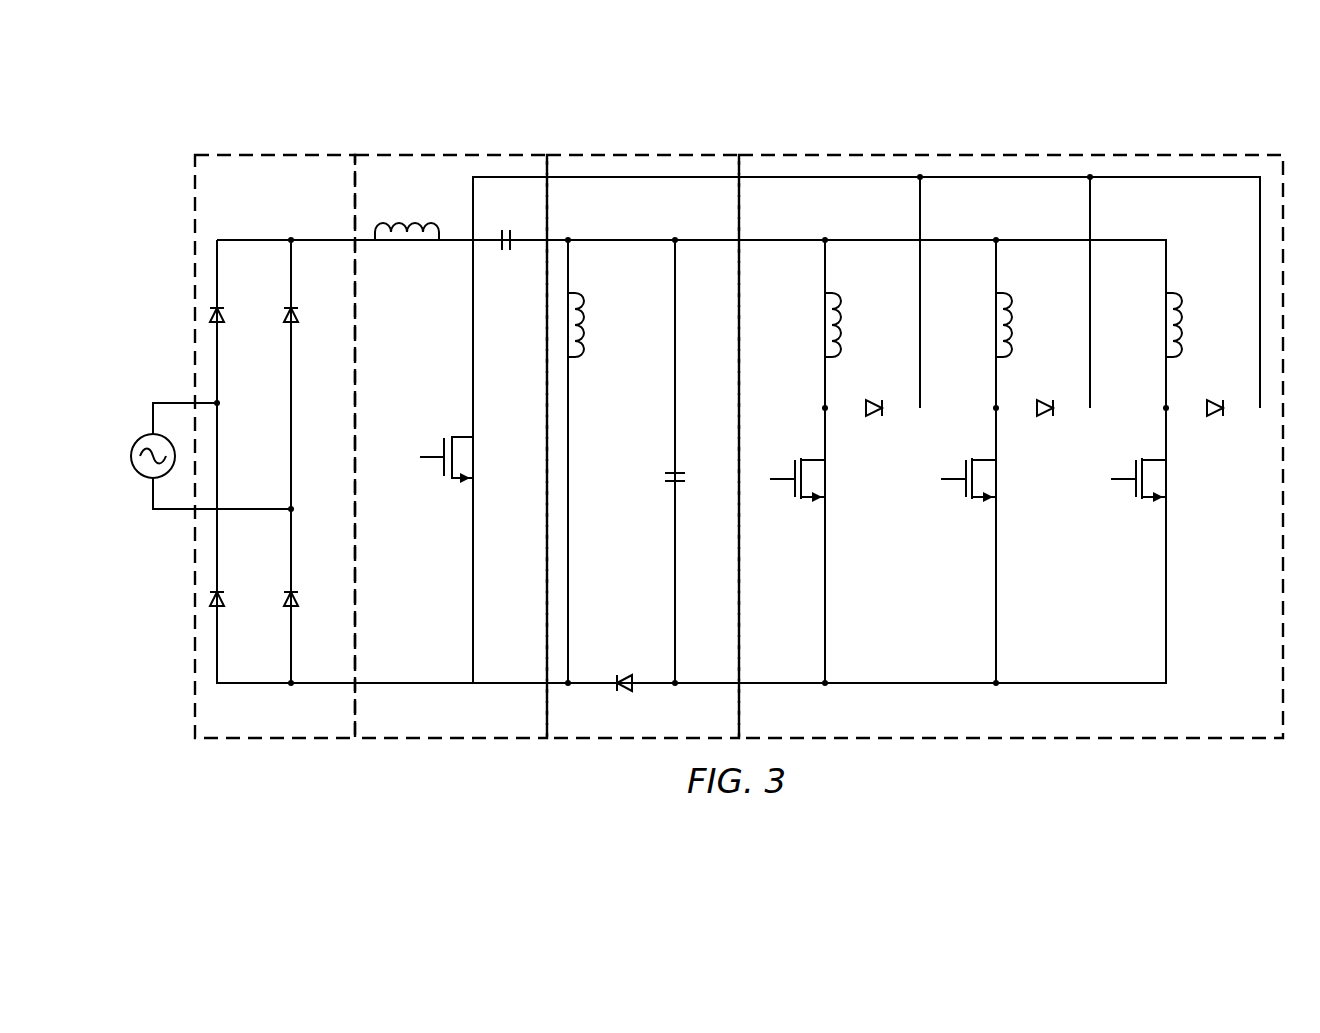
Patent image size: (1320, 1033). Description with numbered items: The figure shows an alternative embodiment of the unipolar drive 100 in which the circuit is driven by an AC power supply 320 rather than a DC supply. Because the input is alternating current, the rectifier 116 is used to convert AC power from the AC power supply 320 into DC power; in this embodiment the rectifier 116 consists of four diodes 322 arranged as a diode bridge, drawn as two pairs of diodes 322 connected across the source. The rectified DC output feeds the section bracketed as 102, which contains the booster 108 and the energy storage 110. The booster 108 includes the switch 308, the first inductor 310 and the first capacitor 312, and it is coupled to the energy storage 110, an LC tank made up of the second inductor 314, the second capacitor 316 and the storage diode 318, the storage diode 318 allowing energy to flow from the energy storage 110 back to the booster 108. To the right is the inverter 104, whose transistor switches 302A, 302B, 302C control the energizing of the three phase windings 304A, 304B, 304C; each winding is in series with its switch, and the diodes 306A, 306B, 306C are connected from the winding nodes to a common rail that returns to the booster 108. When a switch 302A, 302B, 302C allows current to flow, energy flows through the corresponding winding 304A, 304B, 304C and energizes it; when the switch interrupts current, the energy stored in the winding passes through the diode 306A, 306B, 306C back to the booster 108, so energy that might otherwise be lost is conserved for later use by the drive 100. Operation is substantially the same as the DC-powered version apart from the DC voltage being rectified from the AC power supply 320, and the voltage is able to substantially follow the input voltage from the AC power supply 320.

The drive 100 is at (1141, 790).
The converter stage 102 is at (740, 70).
The inverter 104 is at (1142, 150).
The booster 108 is at (395, 150).
The energy storage 110 is at (682, 150).
The rectifier 116 is at (256, 150).
The switch 302A is at (796, 490).
The switch 302B is at (966, 490).
The switch 302C is at (1136, 490).
The winding 304A is at (844, 320).
The winding 304B is at (1015, 320).
The winding 304C is at (1185, 320).
The diode 306A is at (872, 398).
The diode 306B is at (1043, 398).
The diode 306C is at (1213, 398).
The switch 308 is at (444, 470).
The inductor L1 310 is at (433, 222).
The capacitor C1 312 is at (505, 253).
The inductor L2 314 is at (584, 304).
The capacitor C2 316 is at (666, 477).
The diode D1 318 is at (622, 673).
The AC power supply 320 is at (134, 440).
The diodes 322 is at (226, 314).